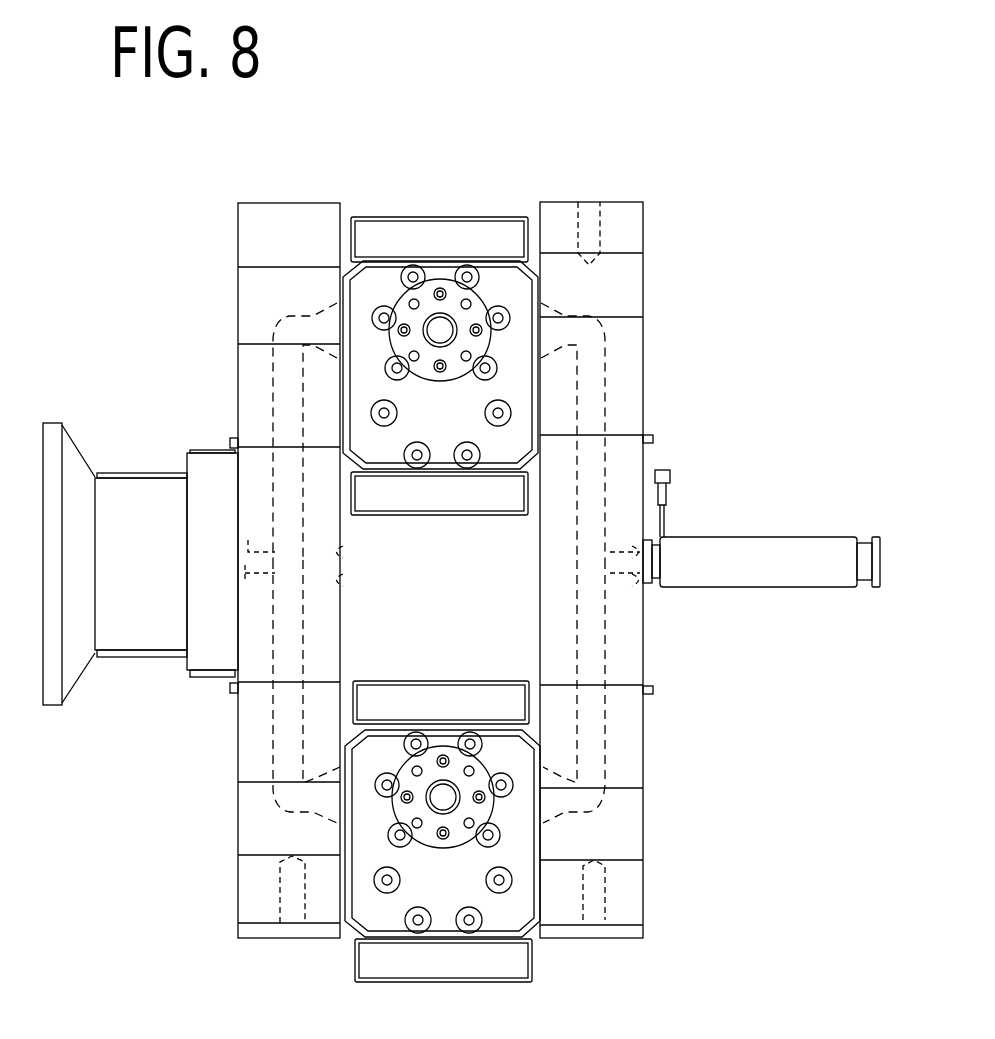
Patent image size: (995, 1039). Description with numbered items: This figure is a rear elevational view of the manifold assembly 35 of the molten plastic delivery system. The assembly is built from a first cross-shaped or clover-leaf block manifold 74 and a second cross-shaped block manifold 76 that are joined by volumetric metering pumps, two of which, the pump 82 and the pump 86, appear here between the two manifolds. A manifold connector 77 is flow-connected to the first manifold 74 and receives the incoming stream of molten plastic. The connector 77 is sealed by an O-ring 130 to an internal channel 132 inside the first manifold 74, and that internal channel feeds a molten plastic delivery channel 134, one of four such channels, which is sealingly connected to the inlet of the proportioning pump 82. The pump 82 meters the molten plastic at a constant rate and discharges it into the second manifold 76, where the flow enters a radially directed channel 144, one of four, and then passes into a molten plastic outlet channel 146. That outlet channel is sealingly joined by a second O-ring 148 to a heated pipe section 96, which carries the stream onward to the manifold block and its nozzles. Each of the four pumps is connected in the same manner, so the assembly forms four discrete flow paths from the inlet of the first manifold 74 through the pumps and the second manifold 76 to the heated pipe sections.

The manifold assembly 35 is at (387, 162).
The first block manifold 74 is at (262, 203).
The second block manifold 76 is at (560, 202).
The manifold connector 77 is at (133, 658).
The volumetric metering pump 82 is at (417, 218).
The volumetric metering pump 86 is at (430, 681).
The heated pipe section 96 is at (722, 548).
The O-ring 130 is at (245, 573).
The internal channel 132 is at (245, 542).
The molten plastic delivery channel 134 is at (270, 385).
The radially directed channel 144 is at (575, 315).
The molten plastic outlet channel 146 is at (617, 520).
The O-ring 148 is at (655, 505).